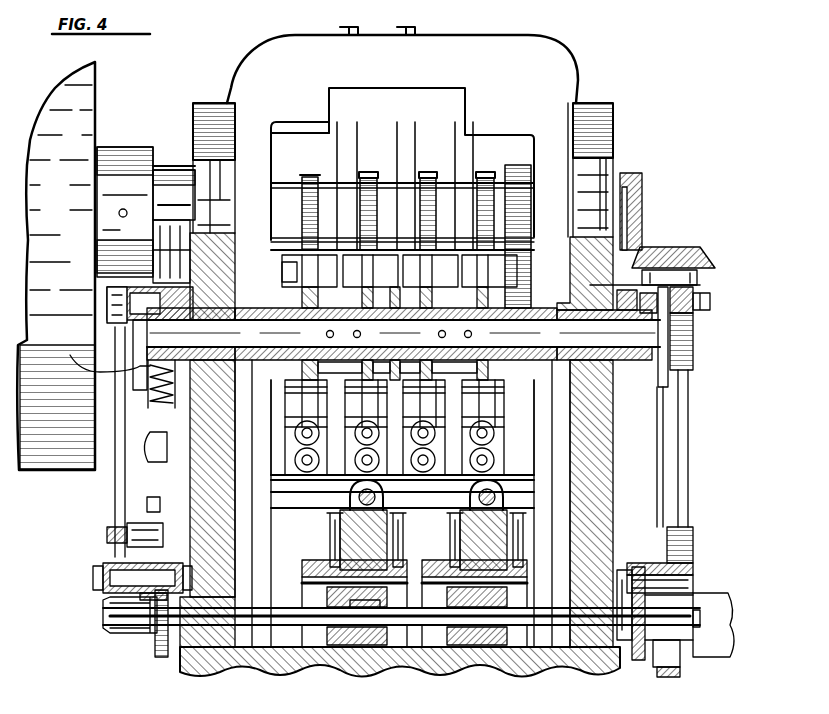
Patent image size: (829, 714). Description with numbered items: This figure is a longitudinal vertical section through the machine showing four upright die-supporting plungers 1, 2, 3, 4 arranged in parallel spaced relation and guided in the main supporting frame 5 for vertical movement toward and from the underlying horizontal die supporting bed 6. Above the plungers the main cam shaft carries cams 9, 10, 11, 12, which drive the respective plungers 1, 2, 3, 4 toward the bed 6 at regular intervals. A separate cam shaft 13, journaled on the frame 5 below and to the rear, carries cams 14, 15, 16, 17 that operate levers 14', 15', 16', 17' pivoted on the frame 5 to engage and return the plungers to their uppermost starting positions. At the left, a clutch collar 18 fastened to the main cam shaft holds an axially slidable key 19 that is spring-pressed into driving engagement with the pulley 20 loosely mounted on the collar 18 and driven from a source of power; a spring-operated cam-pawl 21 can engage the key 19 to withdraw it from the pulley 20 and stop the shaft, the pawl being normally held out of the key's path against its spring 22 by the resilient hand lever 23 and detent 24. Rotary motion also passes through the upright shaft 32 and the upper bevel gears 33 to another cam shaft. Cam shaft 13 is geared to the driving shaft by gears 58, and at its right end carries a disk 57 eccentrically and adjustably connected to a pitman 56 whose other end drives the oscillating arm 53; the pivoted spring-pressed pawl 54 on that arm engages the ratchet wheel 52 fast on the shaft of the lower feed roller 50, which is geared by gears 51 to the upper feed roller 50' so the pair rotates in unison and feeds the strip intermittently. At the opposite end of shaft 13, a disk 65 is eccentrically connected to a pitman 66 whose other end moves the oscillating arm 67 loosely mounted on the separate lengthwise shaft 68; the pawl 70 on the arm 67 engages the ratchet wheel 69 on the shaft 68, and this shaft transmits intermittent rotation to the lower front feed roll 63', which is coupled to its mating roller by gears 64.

The die-supporting plunger 1 is at (469, 247).
The die-supporting plunger 2 is at (412, 250).
The die-supporting plunger 3 is at (352, 247).
The die-supporting plunger 4 is at (292, 250).
The main supporting frame 5 is at (690, 245).
The die supporting bed 6 is at (160, 168).
The cam 9 is at (485, 180).
The cam 10 is at (428, 180).
The cam 11 is at (368, 180).
The cam 12 is at (312, 176).
The cam shaft 13 is at (250, 355).
The cam 14 is at (474, 402).
The cam 15 is at (415, 402).
The cam 16 is at (357, 402).
The cam 17 is at (296, 402).
The lever 14' is at (499, 446).
The lever 15' is at (440, 446).
The lever 16' is at (383, 446).
The lever 17' is at (324, 446).
The clutch collar 18 is at (172, 168).
The axially slidable key 19 is at (148, 252).
The pulley 20 is at (56, 266).
The cam-pawl 21 is at (165, 246).
The spring 22 is at (148, 410).
The hand lever 23 is at (135, 528).
The detent 24 is at (150, 505).
The upright shaft 32 is at (655, 512).
The bevel gears 33 is at (645, 262).
The feed roller 50 is at (486, 611).
The feed roller 50' is at (443, 540).
The gears 51 is at (530, 592).
The ratchet wheel 52 is at (638, 660).
The oscillating arm 53 is at (665, 677).
The pawl 54 is at (637, 560).
The pitman 56 is at (690, 462).
The disk 57 is at (670, 365).
The gears 58 is at (522, 195).
The roller 63' is at (355, 656).
The gears 64 is at (325, 596).
The disk 65 is at (100, 359).
The pitman 66 is at (117, 482).
The oscillating arm 67 is at (150, 618).
The lengthwise shaft 68 is at (282, 630).
The ratchet wheel 69 is at (162, 657).
The pawl 70 is at (110, 558).